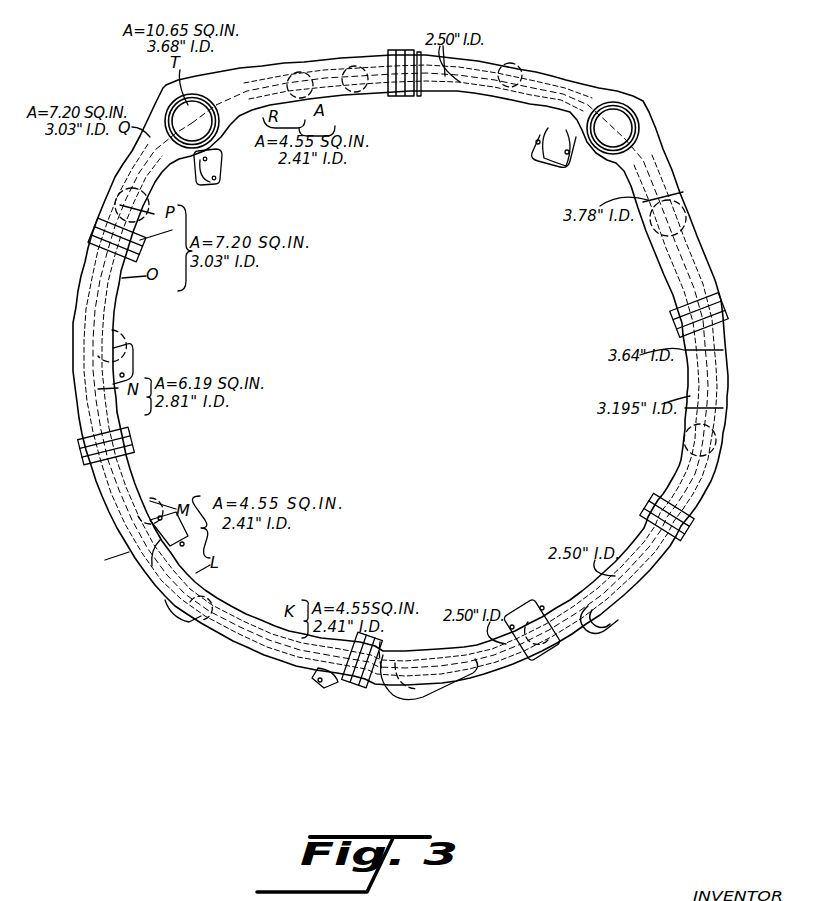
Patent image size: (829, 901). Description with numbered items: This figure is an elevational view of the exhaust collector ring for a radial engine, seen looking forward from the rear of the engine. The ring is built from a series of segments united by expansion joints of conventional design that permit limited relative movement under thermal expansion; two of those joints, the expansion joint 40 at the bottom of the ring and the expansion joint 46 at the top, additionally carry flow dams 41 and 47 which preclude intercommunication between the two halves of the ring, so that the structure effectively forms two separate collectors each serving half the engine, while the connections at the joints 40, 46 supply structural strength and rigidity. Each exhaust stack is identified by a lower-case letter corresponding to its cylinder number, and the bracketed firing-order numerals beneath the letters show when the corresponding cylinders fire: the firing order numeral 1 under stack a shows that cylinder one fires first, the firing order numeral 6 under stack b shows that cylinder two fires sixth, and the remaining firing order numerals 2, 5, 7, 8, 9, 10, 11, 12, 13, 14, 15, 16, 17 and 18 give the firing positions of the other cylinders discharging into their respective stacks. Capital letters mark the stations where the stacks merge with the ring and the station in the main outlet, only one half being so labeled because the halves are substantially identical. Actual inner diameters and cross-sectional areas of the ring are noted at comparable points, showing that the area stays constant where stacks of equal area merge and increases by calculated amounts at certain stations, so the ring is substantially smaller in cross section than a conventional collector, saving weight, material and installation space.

The firing order numeral 1 is at (355, 72).
The firing order numeral 2 is at (196, 618).
The firing order numeral 5 is at (556, 649).
The firing order numeral 6 is at (506, 67).
The firing order numeral 7 is at (144, 552).
The firing order numeral 8 is at (723, 442).
The firing order numeral 9 is at (219, 162).
The firing order numeral 10 is at (406, 696).
The firing order numeral 11 is at (544, 144).
The firing order numeral 12 is at (77, 428).
The firing order numeral 13 is at (718, 292).
The firing order numeral 14 is at (95, 180).
The firing order numeral 15 is at (324, 684).
The firing order numeral 16 is at (689, 220).
The firing order numeral 17 is at (76, 348).
The firing order numeral 18 is at (598, 628).
The expansion joint 40 is at (363, 680).
The flow dam 41 is at (384, 646).
The expansion joint 46 is at (406, 94).
The flow dam 47 is at (432, 90).